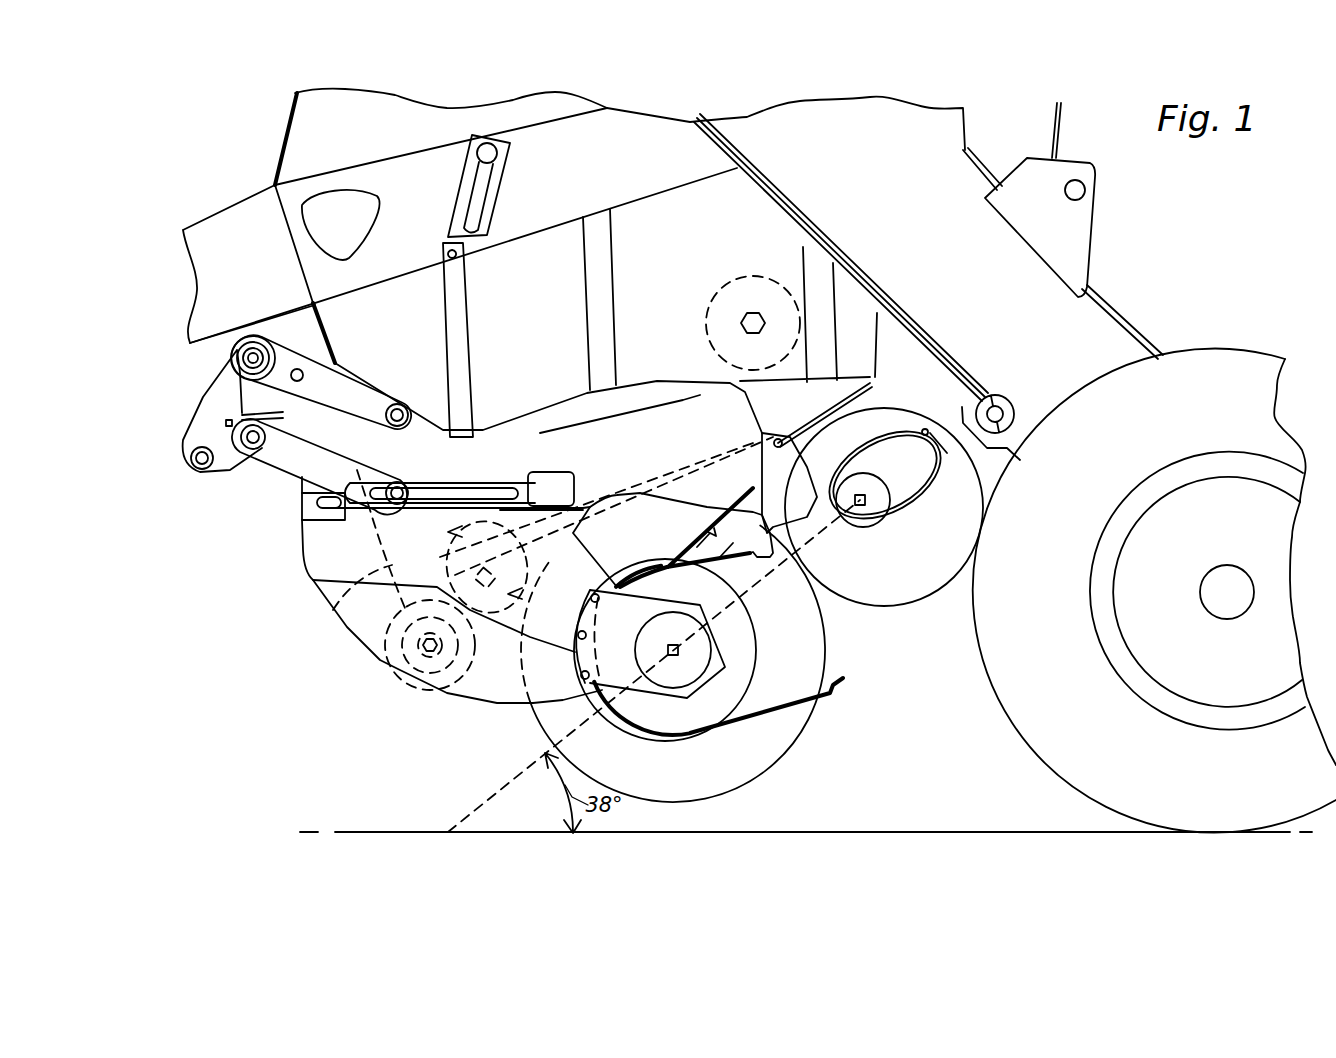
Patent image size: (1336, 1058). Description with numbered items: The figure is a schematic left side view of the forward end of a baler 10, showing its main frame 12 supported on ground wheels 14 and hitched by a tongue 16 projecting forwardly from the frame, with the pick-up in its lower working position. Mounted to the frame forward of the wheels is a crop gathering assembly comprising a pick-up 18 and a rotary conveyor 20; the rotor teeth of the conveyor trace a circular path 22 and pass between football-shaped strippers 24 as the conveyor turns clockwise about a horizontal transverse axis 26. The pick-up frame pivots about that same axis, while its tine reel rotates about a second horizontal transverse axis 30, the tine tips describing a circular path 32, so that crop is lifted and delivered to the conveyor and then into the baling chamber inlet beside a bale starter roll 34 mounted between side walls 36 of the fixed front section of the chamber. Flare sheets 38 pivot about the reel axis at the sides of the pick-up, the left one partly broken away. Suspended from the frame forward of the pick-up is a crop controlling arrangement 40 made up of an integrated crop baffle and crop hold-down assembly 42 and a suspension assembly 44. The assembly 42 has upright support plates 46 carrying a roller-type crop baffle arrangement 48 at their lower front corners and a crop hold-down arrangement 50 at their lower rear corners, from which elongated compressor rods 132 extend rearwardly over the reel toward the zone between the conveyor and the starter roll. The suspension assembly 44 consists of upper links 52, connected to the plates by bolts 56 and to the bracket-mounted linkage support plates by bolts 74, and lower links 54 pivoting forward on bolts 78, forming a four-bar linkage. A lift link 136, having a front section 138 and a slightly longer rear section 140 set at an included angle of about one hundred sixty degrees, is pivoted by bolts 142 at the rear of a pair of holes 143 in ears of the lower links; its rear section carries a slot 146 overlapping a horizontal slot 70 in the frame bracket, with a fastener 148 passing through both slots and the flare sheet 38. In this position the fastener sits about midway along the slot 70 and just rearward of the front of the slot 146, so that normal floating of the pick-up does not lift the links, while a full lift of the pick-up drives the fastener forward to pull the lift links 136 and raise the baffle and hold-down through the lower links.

The baler 10 is at (246, 123).
The main frame 12 is at (430, 314).
The ground wheels 14 is at (1060, 758).
The tongue 16 is at (247, 276).
The pick-up 18 is at (877, 708).
The rotary conveyor 20 is at (914, 612).
The circular path 22 is at (866, 601).
The strippers 24 is at (922, 493).
The horizontal transverse axis 26 is at (860, 508).
The horizontal transverse axis 30 is at (680, 650).
The circular path 32 is at (778, 753).
The bale starter roll 34 is at (706, 318).
The side walls 36 is at (677, 254).
The flare sheets 38 is at (363, 627).
The crop controlling arrangement 40 is at (256, 523).
The integrated crop baffle and crop hold-down assembly 42 is at (482, 528).
The suspension assembly 44 is at (238, 501).
The support plates 46 is at (350, 607).
The crop baffle arrangement 48 is at (398, 703).
The crop hold-down arrangement 50 is at (636, 491).
The upper links 52 is at (328, 383).
The lower links 54 is at (290, 458).
The bolts 56 is at (403, 406).
The horizontal slot 70 is at (335, 507).
The bolts 74 is at (236, 352).
The bolts 78 is at (196, 462).
The compressor rods 132 is at (737, 443).
The lift links 136 is at (331, 438).
The front section 138 is at (290, 490).
The rear section 140 is at (553, 470).
The bolts 142 is at (237, 477).
The holes 143 is at (220, 412).
The slots 146 is at (557, 505).
The fastener 148 is at (398, 486).